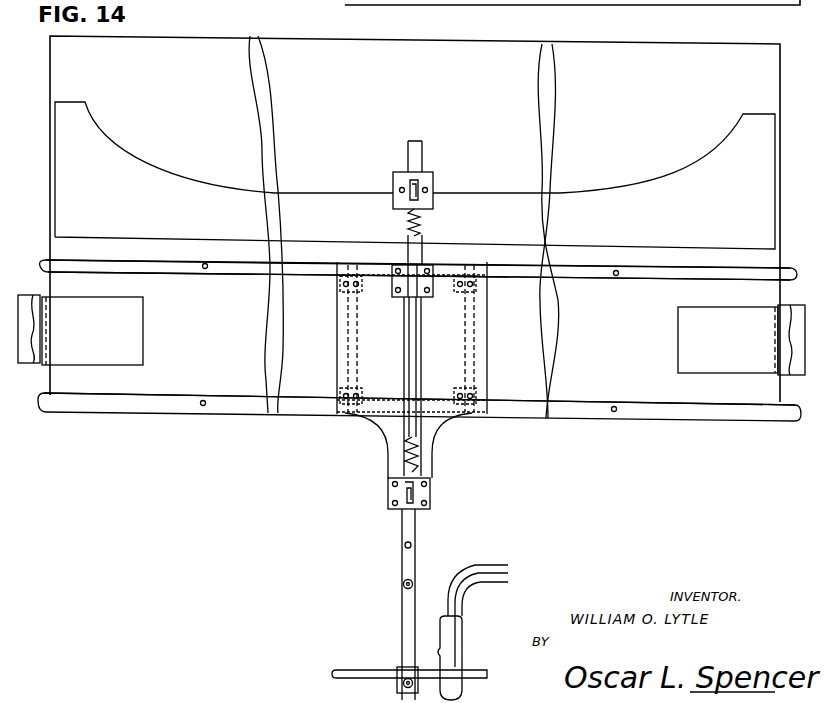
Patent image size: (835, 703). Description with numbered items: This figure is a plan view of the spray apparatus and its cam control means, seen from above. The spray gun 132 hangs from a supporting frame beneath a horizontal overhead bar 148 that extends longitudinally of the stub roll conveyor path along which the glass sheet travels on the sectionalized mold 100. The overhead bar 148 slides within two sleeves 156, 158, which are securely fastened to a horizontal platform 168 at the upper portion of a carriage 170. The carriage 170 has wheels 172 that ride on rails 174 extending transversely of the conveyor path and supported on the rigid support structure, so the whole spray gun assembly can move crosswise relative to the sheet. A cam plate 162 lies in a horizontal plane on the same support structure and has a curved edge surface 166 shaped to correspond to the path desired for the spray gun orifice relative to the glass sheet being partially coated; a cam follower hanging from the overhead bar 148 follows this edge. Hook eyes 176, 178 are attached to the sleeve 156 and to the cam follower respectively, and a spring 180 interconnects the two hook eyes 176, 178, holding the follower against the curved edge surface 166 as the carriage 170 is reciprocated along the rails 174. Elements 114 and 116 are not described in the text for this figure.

The sectionalized mold 100 is at (682, 5).
The bar (adjacent figure) 114 is at (562, 5).
The bar (adjacent figure) 116 is at (580, 5).
The spray gun 132 is at (468, 651).
The overhead bar 148 is at (413, 558).
The sleeve 156 is at (430, 492).
The sleeve 158 is at (430, 265).
The cam plate 162 is at (666, 233).
The curved edge surface 166 is at (557, 186).
The horizontal platform 168 is at (484, 357).
The carriage 170 is at (331, 378).
The wheels 172 is at (455, 398).
The rails 174 is at (185, 273).
The hook eye 176 is at (405, 496).
The hook eye 178 is at (393, 186).
The spring 180 is at (409, 224).